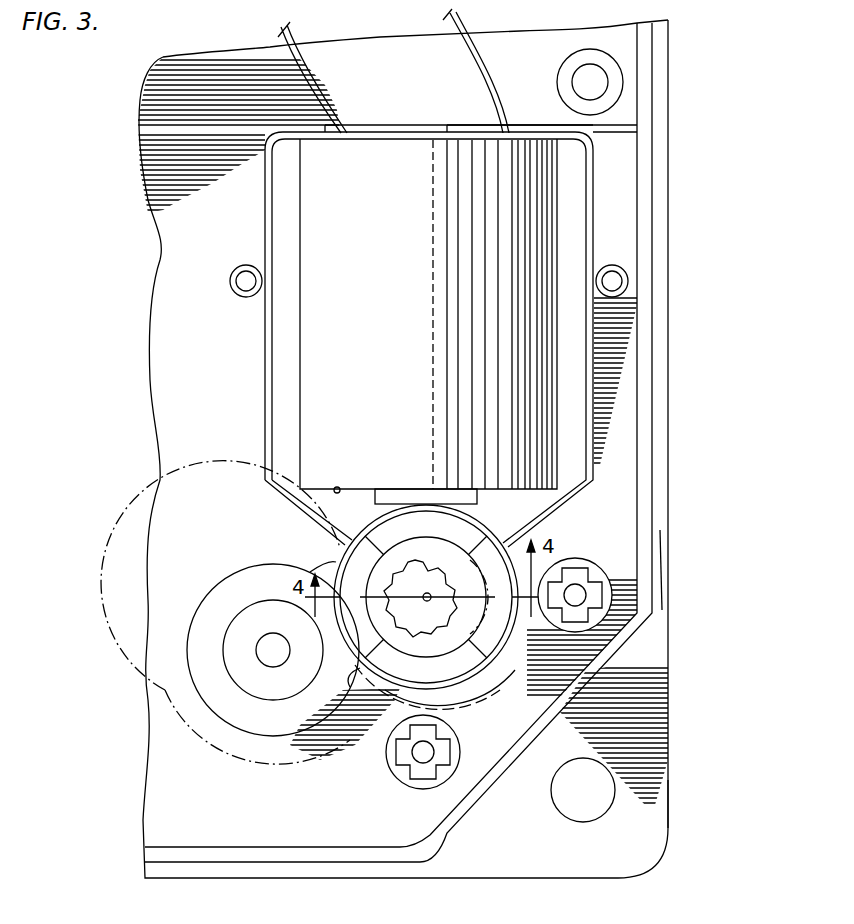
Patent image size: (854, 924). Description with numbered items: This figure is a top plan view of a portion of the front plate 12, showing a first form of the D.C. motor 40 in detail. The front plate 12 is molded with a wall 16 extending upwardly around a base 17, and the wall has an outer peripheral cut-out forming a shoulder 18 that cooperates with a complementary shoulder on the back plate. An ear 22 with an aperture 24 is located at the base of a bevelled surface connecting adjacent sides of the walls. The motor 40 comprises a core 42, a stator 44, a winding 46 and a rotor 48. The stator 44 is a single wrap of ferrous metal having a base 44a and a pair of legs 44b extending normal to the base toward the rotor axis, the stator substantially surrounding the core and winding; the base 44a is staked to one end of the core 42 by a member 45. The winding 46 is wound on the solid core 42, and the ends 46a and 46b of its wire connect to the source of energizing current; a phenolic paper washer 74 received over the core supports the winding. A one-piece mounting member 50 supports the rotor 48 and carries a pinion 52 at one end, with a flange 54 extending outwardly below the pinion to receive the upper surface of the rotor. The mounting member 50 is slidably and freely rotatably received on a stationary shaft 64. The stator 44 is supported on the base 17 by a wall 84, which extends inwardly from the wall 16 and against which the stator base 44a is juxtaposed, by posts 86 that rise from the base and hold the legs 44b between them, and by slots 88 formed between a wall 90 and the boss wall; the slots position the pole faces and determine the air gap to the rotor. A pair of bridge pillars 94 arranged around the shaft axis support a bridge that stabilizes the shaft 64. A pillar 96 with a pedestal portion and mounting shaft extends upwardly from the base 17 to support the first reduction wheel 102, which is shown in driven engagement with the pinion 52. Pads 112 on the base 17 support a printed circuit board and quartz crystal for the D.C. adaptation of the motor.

The front plate 12 is at (670, 398).
The wall 16 is at (640, 447).
The base 17 is at (214, 405).
The shoulder 18 is at (658, 530).
The ears 22 is at (645, 822).
The apertures 24 is at (565, 803).
The D.C. motor 40 is at (248, 436).
The core 42 is at (424, 493).
The stator 44 is at (462, 339).
The base 44a is at (475, 132).
The legs 44b is at (265, 200).
The member 45 is at (412, 124).
The winding 46 is at (330, 312).
The end of wire 46a is at (336, 98).
The end of wire 46b is at (497, 81).
The rotor 48 is at (445, 672).
The mounting member 50 is at (432, 580).
The pinion 52 is at (427, 552).
The flange 54 is at (410, 540).
The shaft 64 is at (420, 598).
The washer 74 is at (339, 487).
The wall 84 is at (625, 125).
The posts 86 is at (242, 278).
The slots 88 is at (503, 655).
The wall 90 is at (487, 680).
The bridge pillars 94 is at (580, 575).
The pillar 96 is at (270, 667).
The first reduction wheel 102 is at (262, 745).
The pads 112 is at (602, 87).